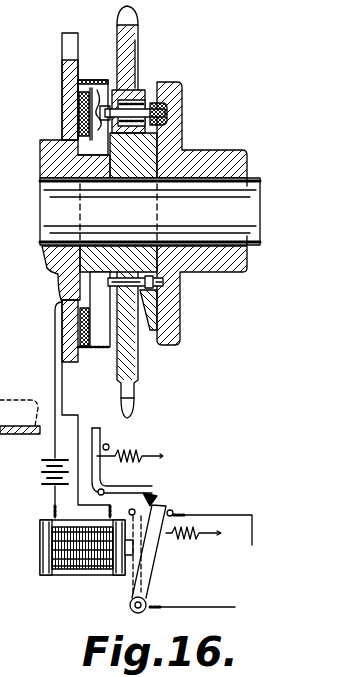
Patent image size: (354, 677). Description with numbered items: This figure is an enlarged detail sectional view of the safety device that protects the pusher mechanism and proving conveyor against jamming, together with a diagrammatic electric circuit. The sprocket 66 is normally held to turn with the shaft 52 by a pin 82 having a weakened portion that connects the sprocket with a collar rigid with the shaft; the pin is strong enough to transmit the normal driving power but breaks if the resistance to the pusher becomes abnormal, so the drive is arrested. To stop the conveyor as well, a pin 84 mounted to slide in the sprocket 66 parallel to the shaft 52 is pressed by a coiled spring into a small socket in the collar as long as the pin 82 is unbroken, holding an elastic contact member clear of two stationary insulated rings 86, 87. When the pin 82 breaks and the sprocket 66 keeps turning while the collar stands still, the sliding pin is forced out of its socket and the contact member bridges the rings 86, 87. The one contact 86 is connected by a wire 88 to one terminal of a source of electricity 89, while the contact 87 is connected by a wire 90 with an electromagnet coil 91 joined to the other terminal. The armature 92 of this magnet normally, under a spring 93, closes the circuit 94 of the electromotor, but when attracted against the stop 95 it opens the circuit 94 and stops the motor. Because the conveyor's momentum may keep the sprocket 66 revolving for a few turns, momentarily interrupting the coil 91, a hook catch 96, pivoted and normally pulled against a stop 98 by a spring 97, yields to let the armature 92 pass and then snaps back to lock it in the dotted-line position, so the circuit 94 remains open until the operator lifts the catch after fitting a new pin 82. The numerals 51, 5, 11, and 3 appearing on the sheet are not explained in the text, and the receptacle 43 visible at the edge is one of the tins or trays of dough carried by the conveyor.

The sprocket 66 is at (135, 41).
The insulated contact ring 87 is at (80, 101).
The insulated contact ring 86 is at (82, 129).
The pin 84 is at (168, 108).
The shaft 52 is at (45, 208).
The hub 51 is at (53, 271).
The pin 82 is at (180, 284).
The wire 88 is at (55, 356).
The wire 90 is at (63, 394).
The source of electricity 89 is at (44, 471).
The electromagnet coil 91 is at (86, 576).
The stop 98 is at (109, 446).
The spring 97 is at (140, 460).
The hook catch 96 is at (148, 491).
The stop 95 is at (136, 511).
The armature 92 is at (160, 570).
The spring 93 is at (200, 540).
The circuit 94 is at (227, 606).
The receptacle 43 is at (20, 417).
The adjacent figure part 5 is at (5, 255).
The adjacent figure part 11 is at (10, 328).
The adjacent figure part 3 is at (5, 385).